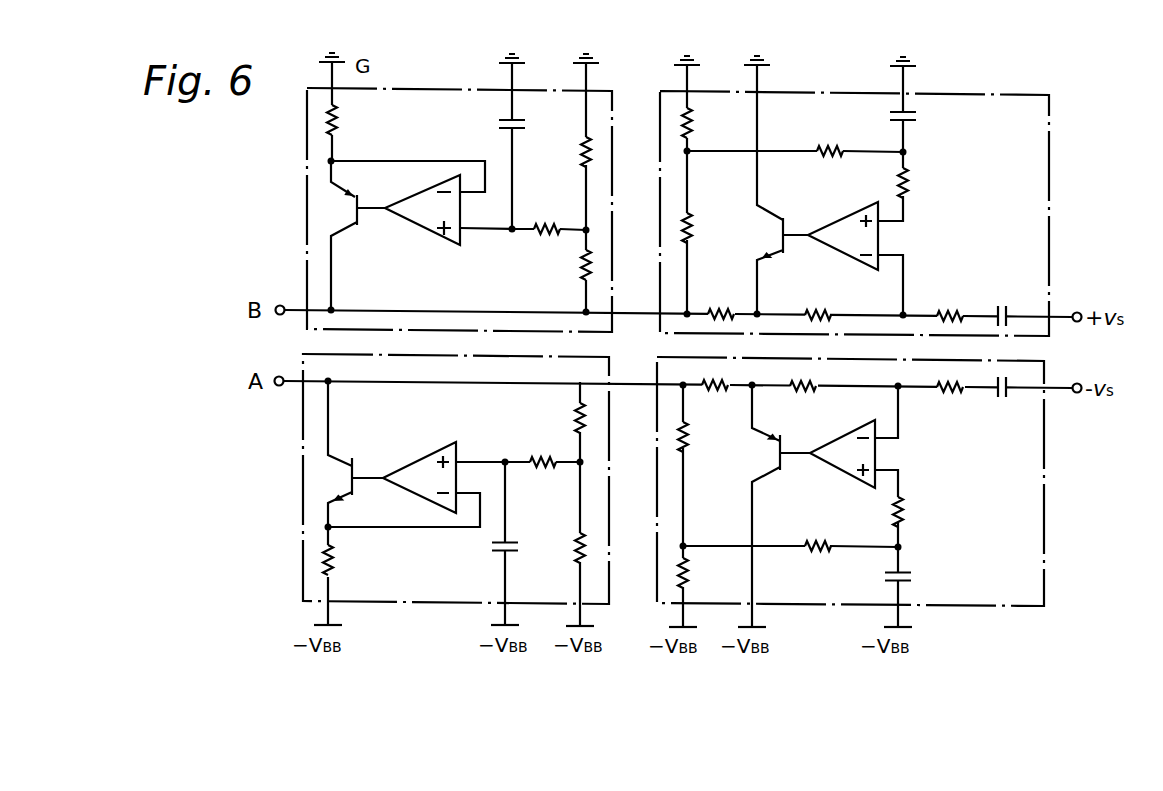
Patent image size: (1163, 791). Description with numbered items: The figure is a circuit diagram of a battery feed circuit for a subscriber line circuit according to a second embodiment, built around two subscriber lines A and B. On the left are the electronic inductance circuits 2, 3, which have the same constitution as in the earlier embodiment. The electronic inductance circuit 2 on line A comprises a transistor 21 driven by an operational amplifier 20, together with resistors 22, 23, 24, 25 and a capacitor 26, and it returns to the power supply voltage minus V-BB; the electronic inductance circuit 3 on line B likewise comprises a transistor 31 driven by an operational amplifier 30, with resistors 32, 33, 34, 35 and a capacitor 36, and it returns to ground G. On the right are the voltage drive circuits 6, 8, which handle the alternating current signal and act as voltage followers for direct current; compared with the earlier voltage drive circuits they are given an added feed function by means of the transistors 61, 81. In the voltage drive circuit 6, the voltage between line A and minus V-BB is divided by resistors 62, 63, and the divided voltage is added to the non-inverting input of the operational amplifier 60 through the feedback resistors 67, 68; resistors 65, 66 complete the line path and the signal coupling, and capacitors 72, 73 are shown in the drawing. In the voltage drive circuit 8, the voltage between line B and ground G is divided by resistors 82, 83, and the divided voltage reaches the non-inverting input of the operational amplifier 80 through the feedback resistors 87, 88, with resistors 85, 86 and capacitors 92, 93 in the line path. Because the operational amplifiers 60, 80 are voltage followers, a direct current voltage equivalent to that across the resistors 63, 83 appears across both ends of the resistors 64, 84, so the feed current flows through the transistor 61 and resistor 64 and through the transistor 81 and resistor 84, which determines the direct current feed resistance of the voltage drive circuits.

The electronic inductance circuit 2 is at (300, 473).
The electronic inductance circuit 3 is at (305, 128).
The voltage drive circuit 6 is at (1047, 472).
The voltage drive circuit 8 is at (1052, 180).
The operational amplifier 20 is at (432, 450).
The transistor 21 is at (340, 456).
The resistor 22 is at (584, 548).
The resistor 23 is at (584, 412).
The resistor 24 is at (535, 456).
The resistor 25 is at (337, 562).
The capacitor 26 is at (518, 552).
The operational amplifier 30 is at (417, 200).
The transistor 31 is at (352, 193).
The resistor 32 is at (590, 148).
The resistor 33 is at (590, 264).
The resistor 34 is at (540, 224).
The resistor 35 is at (341, 122).
The capacitor 36 is at (527, 126).
The operational amplifier 60 is at (850, 436).
The transistor 61 is at (772, 435).
The resistor 62 is at (690, 582).
The resistor 63 is at (690, 440).
The resistor 64 is at (714, 382).
The resistor 65 is at (814, 382).
The resistor 66 is at (938, 394).
The feedback resistor 67 is at (816, 540).
The feedback resistor 68 is at (908, 512).
The capacitor 72 is at (912, 580).
The capacitor 73 is at (1000, 400).
The operational amplifier 80 is at (850, 207).
The transistor 81 is at (778, 212).
The resistor 82 is at (696, 120).
The resistor 83 is at (694, 234).
The resistor 84 is at (717, 300).
The resistor 85 is at (815, 300).
The resistor 86 is at (946, 302).
The feedback resistor 87 is at (824, 146).
The feedback resistor 88 is at (912, 182).
The capacitor 92 is at (917, 118).
The capacitor 93 is at (1002, 300).